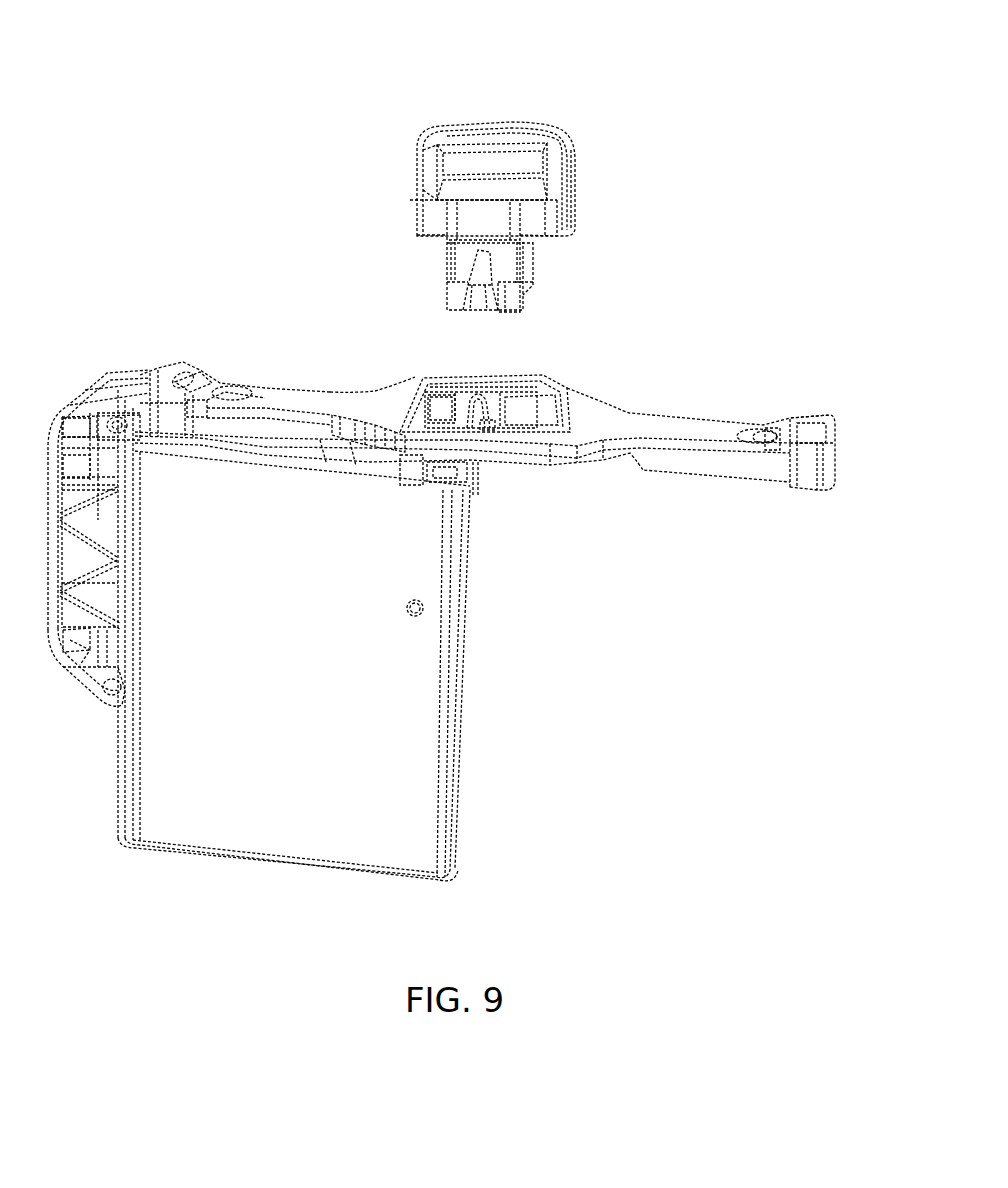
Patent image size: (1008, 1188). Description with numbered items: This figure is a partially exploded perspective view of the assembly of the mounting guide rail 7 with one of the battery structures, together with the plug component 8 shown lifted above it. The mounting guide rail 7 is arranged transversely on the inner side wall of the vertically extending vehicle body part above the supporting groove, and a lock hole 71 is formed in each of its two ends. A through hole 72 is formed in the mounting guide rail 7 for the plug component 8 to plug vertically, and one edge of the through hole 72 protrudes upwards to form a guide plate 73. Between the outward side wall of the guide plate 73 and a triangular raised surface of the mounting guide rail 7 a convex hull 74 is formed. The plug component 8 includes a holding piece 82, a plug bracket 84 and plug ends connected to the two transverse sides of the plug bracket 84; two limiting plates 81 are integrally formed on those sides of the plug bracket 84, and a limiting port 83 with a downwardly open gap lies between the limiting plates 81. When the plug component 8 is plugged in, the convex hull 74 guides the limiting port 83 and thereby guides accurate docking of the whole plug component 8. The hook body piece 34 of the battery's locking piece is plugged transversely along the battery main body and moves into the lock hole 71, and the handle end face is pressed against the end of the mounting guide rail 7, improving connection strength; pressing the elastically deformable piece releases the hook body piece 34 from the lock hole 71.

The mounting guide rail 7 is at (663, 427).
The plug component 8 is at (583, 190).
The hook body piece 34 is at (187, 386).
The lock hole 71 is at (207, 375).
The through hole 72 is at (430, 406).
The guide plate 73 is at (550, 383).
The convex hull 74 is at (493, 427).
The limiting plate 81 is at (475, 257).
The holding piece 82 is at (575, 146).
The limiting port 83 is at (512, 259).
The plug bracket 84 is at (512, 300).